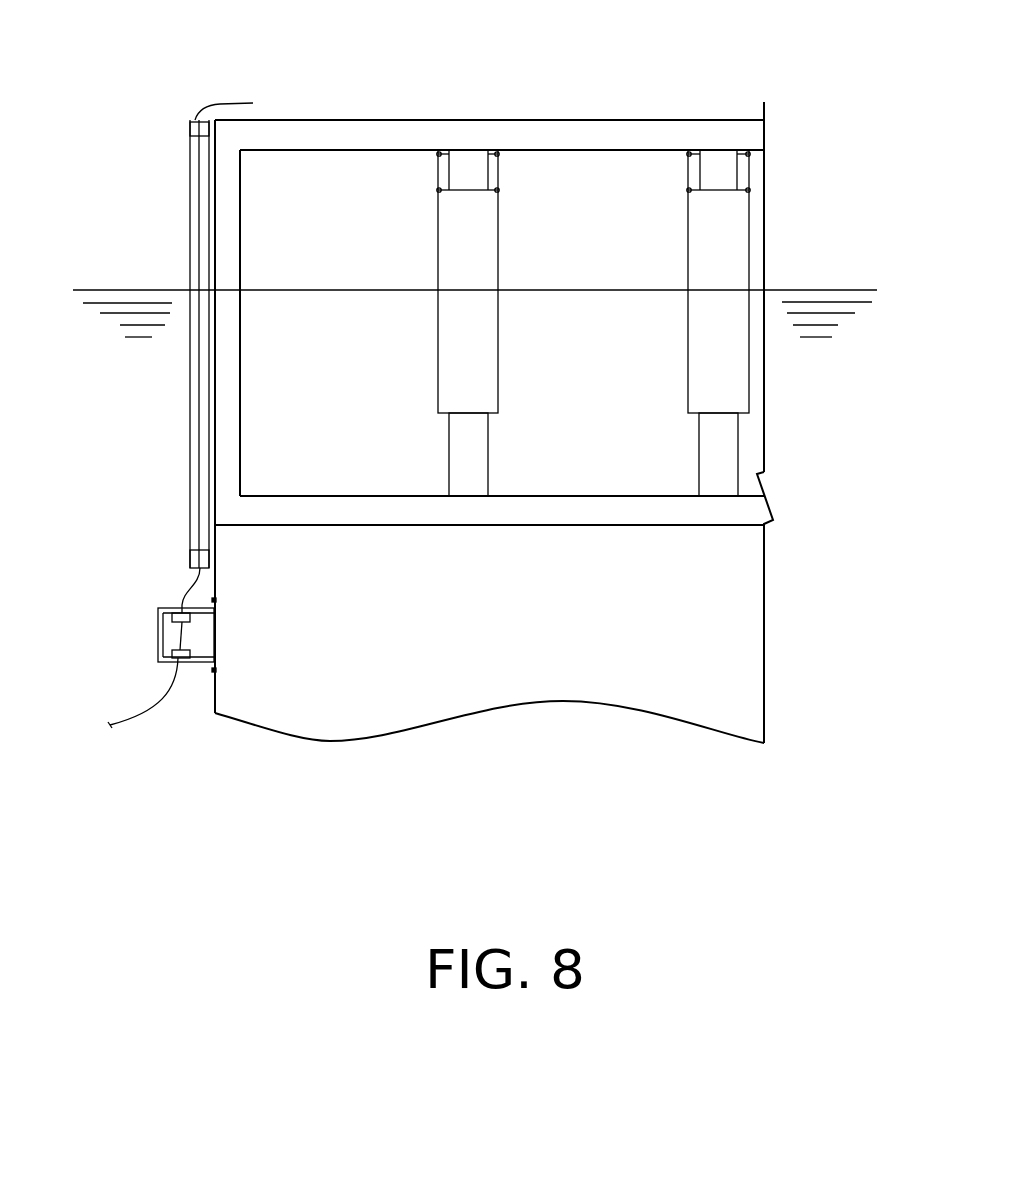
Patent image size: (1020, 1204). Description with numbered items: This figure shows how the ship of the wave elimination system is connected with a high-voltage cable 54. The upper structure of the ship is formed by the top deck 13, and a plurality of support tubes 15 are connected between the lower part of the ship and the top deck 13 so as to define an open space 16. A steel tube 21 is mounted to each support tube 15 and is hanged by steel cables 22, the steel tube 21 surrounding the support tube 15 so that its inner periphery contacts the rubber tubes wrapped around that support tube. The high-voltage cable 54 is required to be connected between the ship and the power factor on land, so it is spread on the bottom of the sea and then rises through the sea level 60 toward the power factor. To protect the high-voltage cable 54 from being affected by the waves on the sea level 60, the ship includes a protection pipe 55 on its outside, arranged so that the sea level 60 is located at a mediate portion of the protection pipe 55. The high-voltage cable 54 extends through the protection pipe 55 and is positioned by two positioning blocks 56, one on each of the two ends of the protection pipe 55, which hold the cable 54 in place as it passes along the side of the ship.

The top deck 13 is at (568, 127).
The support tube 15 is at (490, 177).
The open space 16 is at (677, 388).
The steel tube 21 is at (498, 318).
The steel cable 22 is at (497, 166).
The high-voltage cable 54 is at (228, 103).
The protection pipe 55 is at (190, 433).
The positioning block 56 is at (190, 127).
The sea level 60 is at (830, 290).